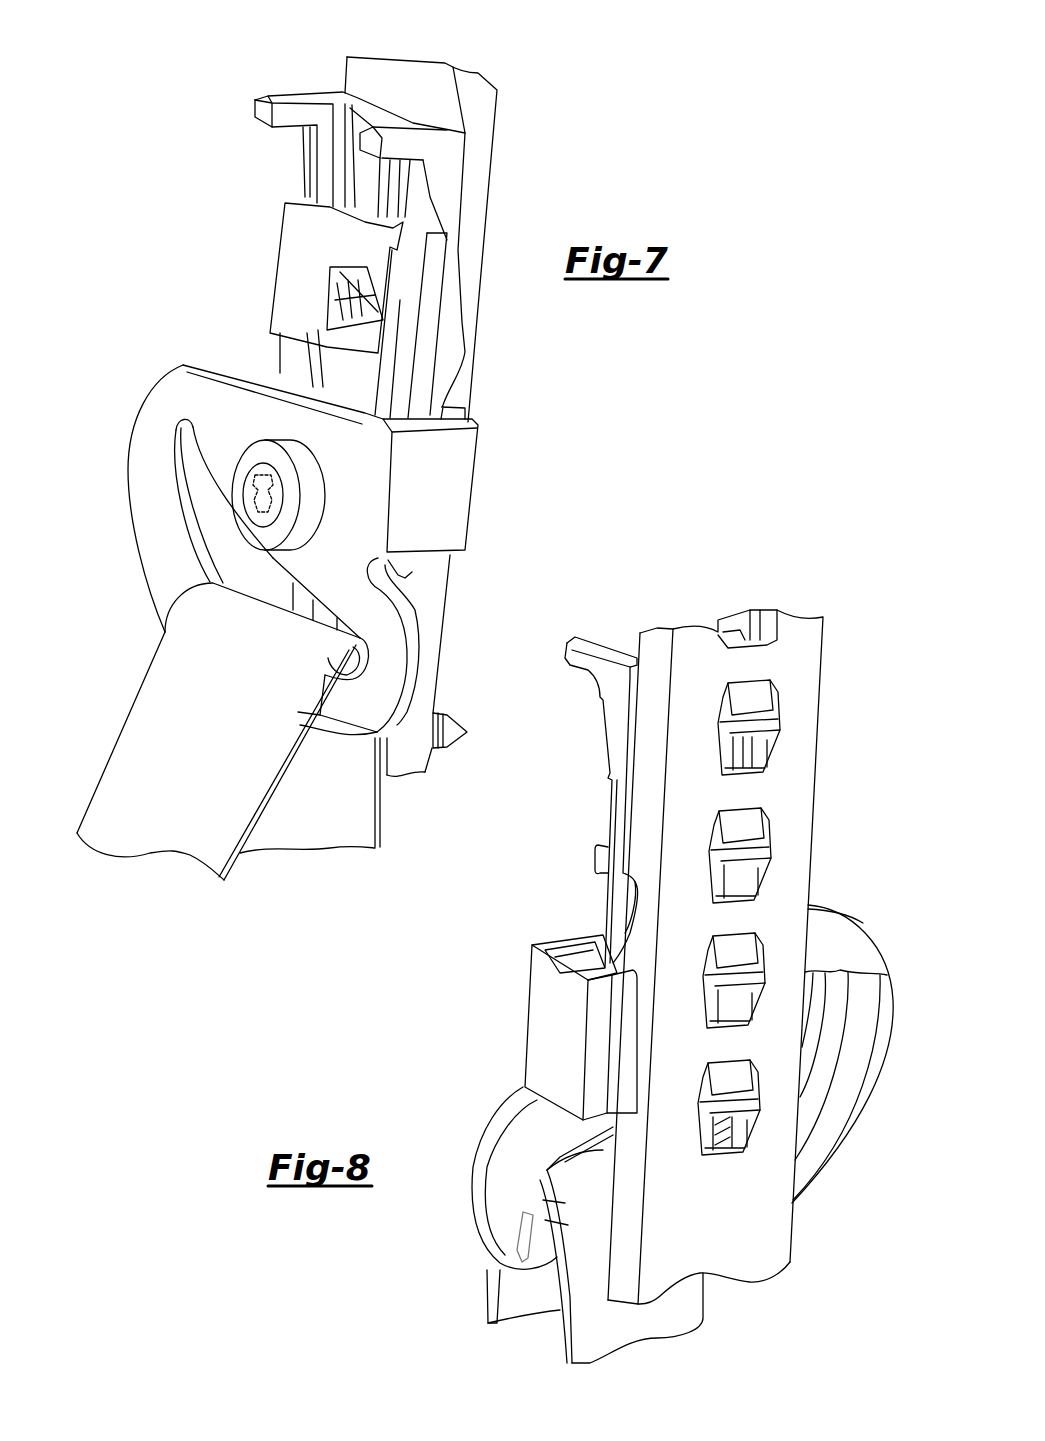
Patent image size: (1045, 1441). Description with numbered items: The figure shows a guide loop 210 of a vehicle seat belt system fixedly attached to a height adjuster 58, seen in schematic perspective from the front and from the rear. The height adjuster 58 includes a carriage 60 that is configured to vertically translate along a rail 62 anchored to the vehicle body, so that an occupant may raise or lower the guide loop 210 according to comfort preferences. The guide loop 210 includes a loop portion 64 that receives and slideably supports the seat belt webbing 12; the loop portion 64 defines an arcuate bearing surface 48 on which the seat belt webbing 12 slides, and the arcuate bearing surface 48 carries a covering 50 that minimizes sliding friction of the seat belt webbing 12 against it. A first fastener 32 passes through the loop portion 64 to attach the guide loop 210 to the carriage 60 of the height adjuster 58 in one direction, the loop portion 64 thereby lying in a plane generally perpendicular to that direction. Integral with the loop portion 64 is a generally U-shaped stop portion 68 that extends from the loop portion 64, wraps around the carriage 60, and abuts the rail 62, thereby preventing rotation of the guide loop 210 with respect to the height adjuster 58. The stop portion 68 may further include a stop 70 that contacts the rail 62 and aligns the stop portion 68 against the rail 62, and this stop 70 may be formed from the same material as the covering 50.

In FIG. 7, the seat belt webbing 12 is at (217, 737).
In FIG. 8, the seat belt webbing 12 is at (587, 1225).
In FIG. 7, the first fastener 32 is at (258, 455).
In FIG. 7, the arcuate bearing surface 48 is at (185, 500).
In FIG. 8, the covering 50 is at (548, 1250).
In FIG. 7, the height adjuster 58 is at (405, 214).
In FIG. 8, the height adjuster 58 is at (705, 933).
In FIG. 7, the carriage 60 is at (320, 188).
In FIG. 8, the carriage 60 is at (610, 715).
In FIG. 7, the rail 62 is at (487, 120).
In FIG. 8, the rail 62 is at (800, 718).
In FIG. 7, the loop portion 64 is at (155, 548).
In FIG. 8, the loop portion 64 is at (850, 1107).
In FIG. 7, the stop portion 68 is at (455, 503).
In FIG. 8, the stop portion 68 is at (547, 1027).
In FIG. 8, the stop 70 is at (630, 1043).
In FIG. 7, the guide loop 210 is at (542, 424).
In FIG. 8, the guide loop 210 is at (900, 880).